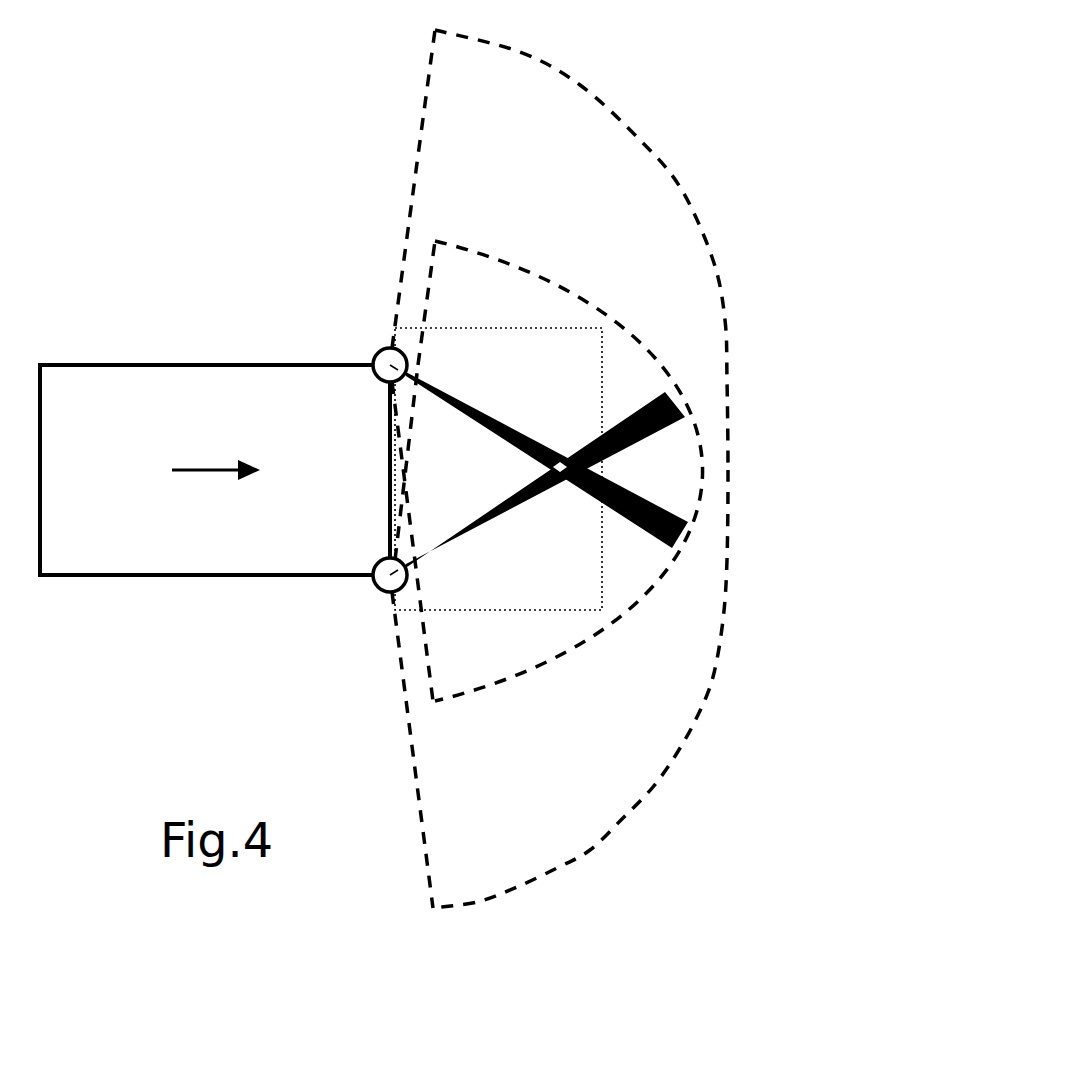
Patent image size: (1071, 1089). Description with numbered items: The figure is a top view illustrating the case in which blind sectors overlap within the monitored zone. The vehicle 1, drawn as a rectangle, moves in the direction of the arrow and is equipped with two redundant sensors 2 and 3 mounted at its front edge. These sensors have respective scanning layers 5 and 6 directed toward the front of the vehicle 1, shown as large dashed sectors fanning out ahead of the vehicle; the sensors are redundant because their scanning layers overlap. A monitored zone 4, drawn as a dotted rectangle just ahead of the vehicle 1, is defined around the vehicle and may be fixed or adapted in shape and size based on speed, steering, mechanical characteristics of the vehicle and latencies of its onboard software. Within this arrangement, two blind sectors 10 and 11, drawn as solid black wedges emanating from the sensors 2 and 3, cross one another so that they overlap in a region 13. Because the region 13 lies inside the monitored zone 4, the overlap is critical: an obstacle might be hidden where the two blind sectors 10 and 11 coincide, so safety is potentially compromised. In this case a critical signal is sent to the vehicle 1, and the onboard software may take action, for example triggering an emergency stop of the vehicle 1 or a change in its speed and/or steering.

The vehicle 1 is at (127, 577).
The sensor 2 is at (378, 588).
The sensor 3 is at (373, 357).
The monitored zone 4 is at (600, 597).
The scanning layer 5 is at (675, 755).
The scanning layer 6 is at (688, 205).
The blind sector 10 is at (685, 412).
The blind sector 11 is at (520, 428).
The region 13 is at (585, 468).